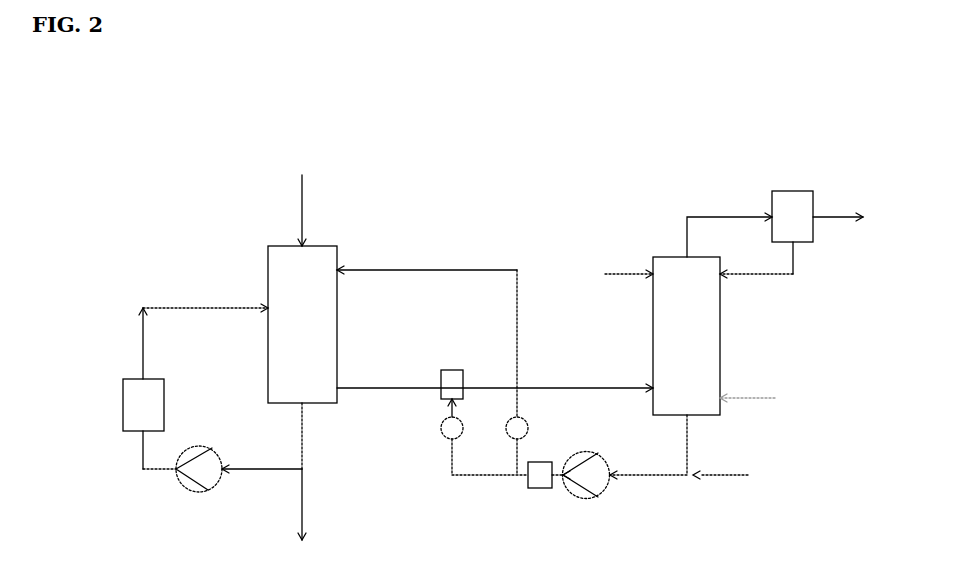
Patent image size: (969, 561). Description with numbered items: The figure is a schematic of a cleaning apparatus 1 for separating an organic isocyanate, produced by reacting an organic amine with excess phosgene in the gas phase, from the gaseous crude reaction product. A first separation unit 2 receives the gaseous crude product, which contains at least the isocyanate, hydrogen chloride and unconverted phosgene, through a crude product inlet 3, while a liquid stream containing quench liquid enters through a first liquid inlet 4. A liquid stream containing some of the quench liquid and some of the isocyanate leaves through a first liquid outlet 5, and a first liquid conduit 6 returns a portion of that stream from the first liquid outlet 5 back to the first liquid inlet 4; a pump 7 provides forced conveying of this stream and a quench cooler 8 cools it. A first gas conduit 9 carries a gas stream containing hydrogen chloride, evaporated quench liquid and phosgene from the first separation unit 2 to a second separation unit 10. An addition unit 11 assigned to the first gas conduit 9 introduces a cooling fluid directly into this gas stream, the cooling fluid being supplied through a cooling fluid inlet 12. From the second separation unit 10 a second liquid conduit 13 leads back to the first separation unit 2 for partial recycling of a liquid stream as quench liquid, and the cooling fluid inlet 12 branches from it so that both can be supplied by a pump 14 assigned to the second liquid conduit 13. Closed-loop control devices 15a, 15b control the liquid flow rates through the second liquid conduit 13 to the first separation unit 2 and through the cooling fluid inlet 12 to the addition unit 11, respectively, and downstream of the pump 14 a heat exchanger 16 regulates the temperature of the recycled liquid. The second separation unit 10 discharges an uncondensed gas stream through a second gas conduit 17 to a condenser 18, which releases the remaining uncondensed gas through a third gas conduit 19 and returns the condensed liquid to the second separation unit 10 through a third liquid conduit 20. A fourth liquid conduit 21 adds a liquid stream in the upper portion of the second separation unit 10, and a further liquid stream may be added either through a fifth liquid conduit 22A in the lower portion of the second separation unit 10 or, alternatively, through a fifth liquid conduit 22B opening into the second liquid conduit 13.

The cleaning apparatus 1 is at (545, 228).
The first separation unit 2 is at (302, 324).
The crude product inlet 3 is at (307, 210).
The first liquid inlet 4 is at (205, 302).
The first liquid outlet 5 is at (308, 471).
The first liquid conduit 6 is at (262, 462).
The pump 7 is at (182, 469).
The quench cooler 8 is at (143, 388).
The first gas conduit 9 is at (495, 381).
The second separation unit 10 is at (686, 336).
The addition unit 11 is at (452, 384).
The cooling fluid inlet 12 is at (477, 437).
The second liquid conduit 13 is at (521, 366).
The pump 14 is at (586, 475).
The closed-loop control device 15a is at (530, 428).
The closed-loop control device 15b is at (463, 428).
The heat exchanger 16 is at (549, 475).
The second gas conduit 17 is at (729, 228).
The condenser 18 is at (792, 216).
The third gas conduit 19 is at (838, 210).
The third liquid conduit 20 is at (756, 260).
The fourth liquid conduit 21 is at (629, 267).
The fifth liquid conduit 22A is at (747, 391).
The fifth liquid conduit 22B is at (720, 468).